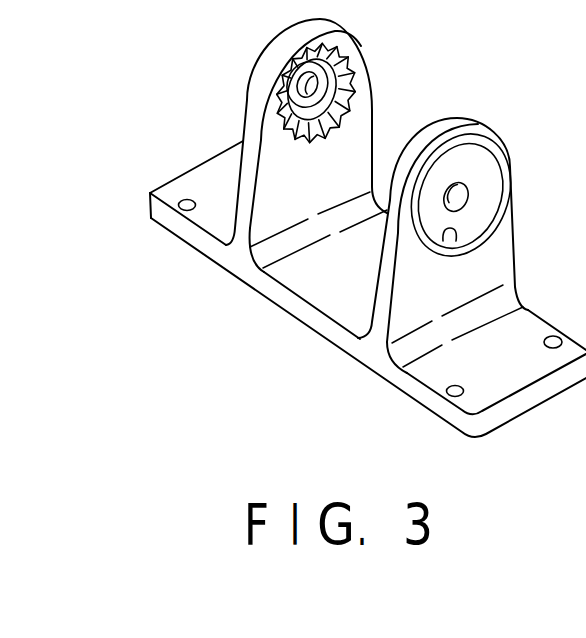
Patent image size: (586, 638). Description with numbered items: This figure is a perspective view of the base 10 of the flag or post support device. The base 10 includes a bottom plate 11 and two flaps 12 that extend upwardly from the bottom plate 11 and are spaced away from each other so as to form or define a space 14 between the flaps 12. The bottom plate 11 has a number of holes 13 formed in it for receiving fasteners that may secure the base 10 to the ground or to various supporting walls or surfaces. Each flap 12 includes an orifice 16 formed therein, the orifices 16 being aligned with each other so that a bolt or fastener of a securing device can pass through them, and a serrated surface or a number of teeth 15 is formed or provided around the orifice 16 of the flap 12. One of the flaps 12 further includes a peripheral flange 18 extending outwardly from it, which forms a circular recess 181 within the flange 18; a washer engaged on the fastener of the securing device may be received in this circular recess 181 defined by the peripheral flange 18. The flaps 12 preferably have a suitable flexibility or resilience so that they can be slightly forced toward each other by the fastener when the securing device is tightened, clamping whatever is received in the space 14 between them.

The base 10 is at (368, 241).
The bottom plate 11 is at (300, 308).
The flap 12 is at (237, 222).
The hole 13 is at (185, 200).
The space 14 is at (275, 215).
The teeth 15 is at (282, 101).
The orifice 16 is at (310, 72).
The peripheral flange 18 is at (490, 226).
The circular recess 181 is at (445, 241).